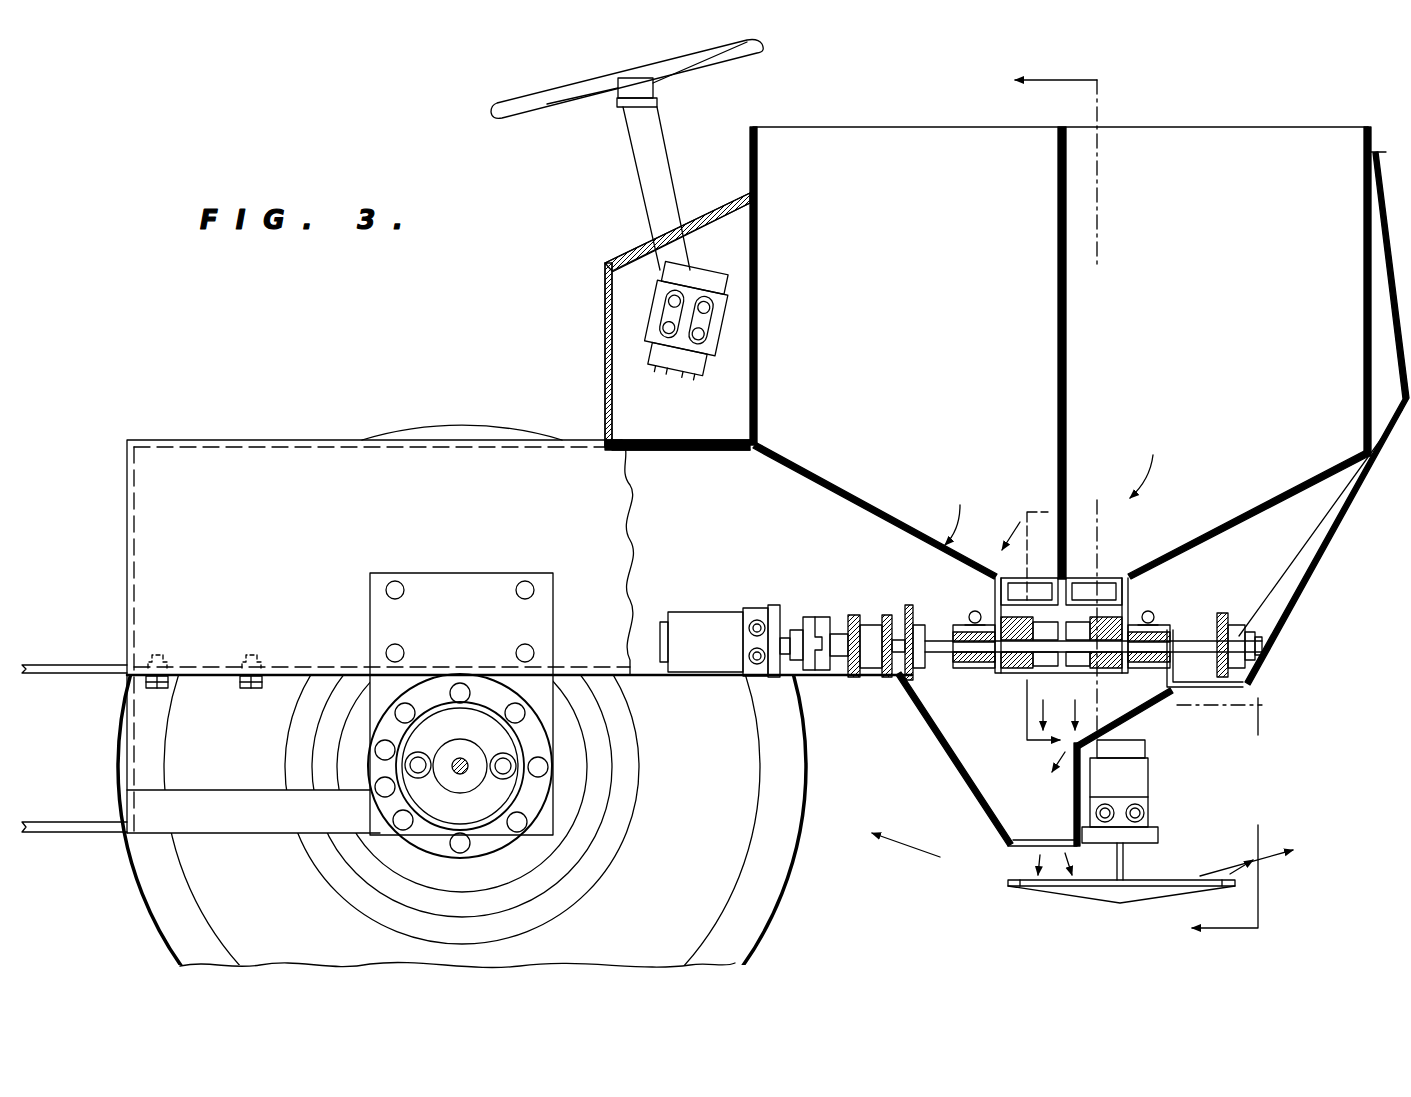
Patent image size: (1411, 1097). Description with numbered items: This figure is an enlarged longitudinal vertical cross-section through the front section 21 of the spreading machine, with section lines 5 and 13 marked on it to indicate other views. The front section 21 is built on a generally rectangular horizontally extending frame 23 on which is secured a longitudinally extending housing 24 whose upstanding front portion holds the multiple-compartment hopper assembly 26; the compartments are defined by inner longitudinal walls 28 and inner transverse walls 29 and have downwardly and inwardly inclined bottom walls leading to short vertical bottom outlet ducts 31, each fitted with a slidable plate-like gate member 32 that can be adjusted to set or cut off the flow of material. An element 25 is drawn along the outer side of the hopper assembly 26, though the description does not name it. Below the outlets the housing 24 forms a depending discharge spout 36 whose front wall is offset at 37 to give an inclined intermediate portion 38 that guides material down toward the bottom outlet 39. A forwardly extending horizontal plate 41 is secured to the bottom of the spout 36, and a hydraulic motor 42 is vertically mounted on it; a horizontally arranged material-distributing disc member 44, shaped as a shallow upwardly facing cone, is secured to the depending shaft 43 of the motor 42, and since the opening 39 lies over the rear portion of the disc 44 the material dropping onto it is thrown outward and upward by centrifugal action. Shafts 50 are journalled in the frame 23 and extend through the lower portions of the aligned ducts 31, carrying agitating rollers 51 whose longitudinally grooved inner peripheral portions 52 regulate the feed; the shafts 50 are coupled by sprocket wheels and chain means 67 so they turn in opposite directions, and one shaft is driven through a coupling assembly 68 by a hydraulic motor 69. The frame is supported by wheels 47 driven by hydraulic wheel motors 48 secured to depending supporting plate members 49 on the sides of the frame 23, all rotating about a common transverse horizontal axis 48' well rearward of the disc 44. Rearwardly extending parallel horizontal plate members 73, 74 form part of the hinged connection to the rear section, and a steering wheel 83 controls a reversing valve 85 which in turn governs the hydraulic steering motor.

The section line 5— 5 is at (1152, 514).
The section line 13— 13 is at (1031, 617).
The front section 21 is at (170, 378).
The frame 23 is at (842, 680).
The housing 24 is at (127, 555).
The side deflector plate 25 is at (1378, 152).
The multiple-compartment hopper assembly 26 is at (1265, 127).
The inner longitudinal walls 28 is at (985, 258).
The inner transverse walls 29 is at (1057, 372).
The bottom outlet ducts 31 is at (985, 615).
The gate member 32 is at (1108, 578).
The discharge spout 36 is at (962, 745).
The offset of front wall 37 is at (1072, 765).
The inclined intermediate portion 38 is at (1137, 712).
The bottom outlet 39 is at (1025, 845).
The horizontal plate 41 is at (1158, 838).
The hydraulic motor 42 is at (1148, 788).
The depending shaft 43 is at (1123, 867).
The material-distributing disc member 44 is at (1010, 886).
The wheels 47 is at (770, 906).
The hydraulic wheel motors 48 is at (460, 741).
The common transverse horizontal axis 48' is at (467, 776).
The supporting plate members 49 is at (546, 637).
The shafts 50 is at (1220, 615).
The agitating rollers 51 is at (1010, 672).
The longitudinally grooved inner peripheral portions 52 is at (1037, 582).
The sprocket wheels and sprocket chain means 67 is at (856, 615).
The coupling assembly 68 is at (830, 670).
The hydraulic motor 69 is at (702, 655).
The top plate member 73 is at (63, 670).
The bottom plate member 74 is at (58, 822).
The steering wheel 83 is at (497, 110).
The reversing valve 85 is at (668, 330).